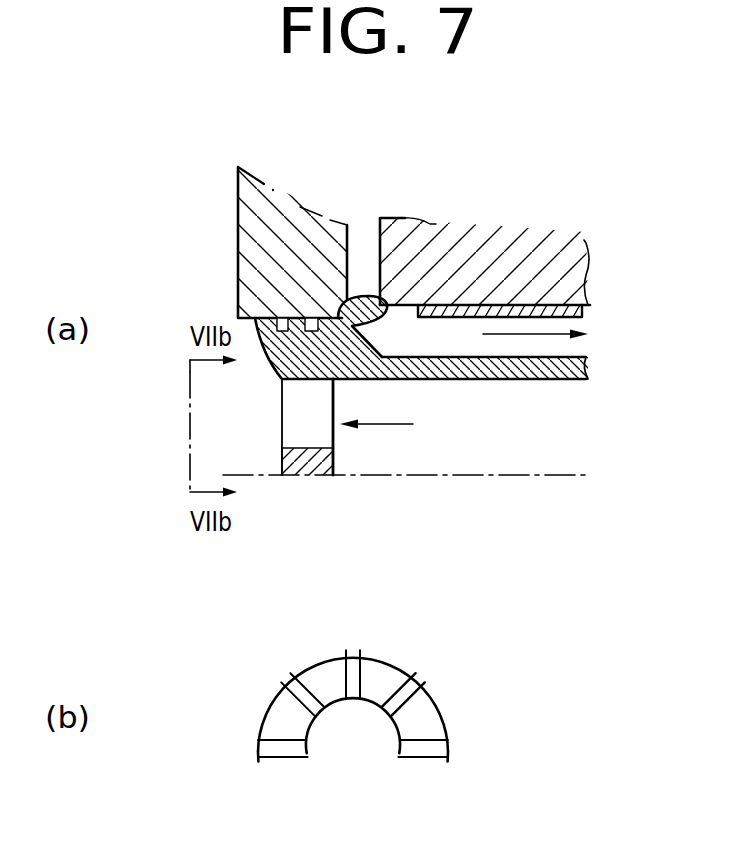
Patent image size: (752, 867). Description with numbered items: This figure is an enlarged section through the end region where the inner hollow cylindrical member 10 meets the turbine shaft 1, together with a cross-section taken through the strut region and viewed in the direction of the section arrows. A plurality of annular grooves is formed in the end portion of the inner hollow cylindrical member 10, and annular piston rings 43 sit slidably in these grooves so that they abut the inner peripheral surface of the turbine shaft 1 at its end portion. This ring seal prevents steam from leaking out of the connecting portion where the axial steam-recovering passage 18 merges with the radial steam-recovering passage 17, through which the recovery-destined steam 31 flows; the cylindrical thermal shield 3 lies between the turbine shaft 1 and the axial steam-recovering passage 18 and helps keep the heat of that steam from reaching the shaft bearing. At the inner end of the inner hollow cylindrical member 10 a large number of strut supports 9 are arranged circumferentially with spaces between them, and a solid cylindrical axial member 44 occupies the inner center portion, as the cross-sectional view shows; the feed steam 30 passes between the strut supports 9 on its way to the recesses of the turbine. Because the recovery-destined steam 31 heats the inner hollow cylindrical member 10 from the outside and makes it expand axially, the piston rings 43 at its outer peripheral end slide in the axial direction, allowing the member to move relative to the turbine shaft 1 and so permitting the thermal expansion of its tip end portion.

The turbine shaft 1 is at (237, 187).
The radial steam-recovering passage 17 is at (358, 228).
The piston rings 43 is at (285, 318).
The thermal shield 3 is at (590, 306).
The recovery-destined steam 31 is at (593, 336).
The inner hollow cylindrical member 10 is at (423, 380).
The axial steam-recovering passage 18 is at (535, 340).
The solid cylindrical axial member 44 is at (312, 462).
The strut supports 9 is at (333, 437).
The feed steam 30 is at (393, 424).